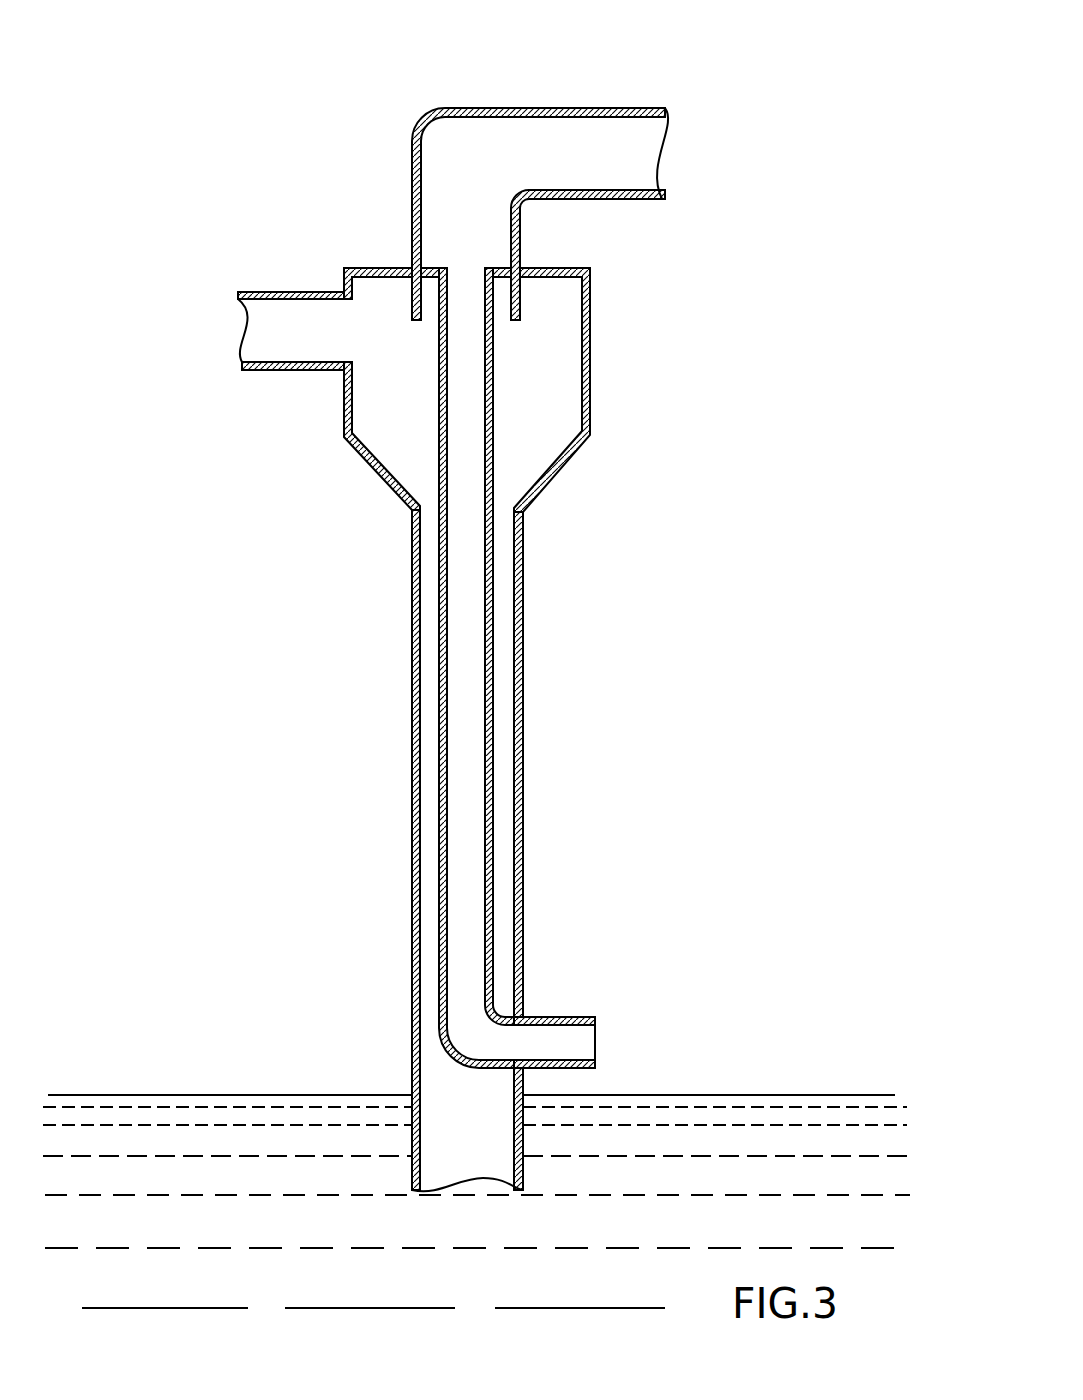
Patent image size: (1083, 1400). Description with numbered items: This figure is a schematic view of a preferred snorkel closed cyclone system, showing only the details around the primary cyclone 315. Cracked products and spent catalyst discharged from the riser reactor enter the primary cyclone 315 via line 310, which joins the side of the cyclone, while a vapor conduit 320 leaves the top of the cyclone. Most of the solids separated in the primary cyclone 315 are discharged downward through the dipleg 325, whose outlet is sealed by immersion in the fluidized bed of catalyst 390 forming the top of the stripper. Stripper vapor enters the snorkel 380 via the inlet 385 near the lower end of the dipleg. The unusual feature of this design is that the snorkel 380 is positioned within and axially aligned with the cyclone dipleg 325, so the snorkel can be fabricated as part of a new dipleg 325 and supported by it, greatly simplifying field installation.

The line 310 is at (292, 293).
The primary cyclone 315 is at (590, 383).
The outlet pipe with elbow 320 is at (527, 108).
The dipleg 325 is at (523, 600).
The snorkel 380 is at (472, 705).
The inlet 385 is at (596, 1035).
The fluidized bed of catalyst 390 is at (277, 1233).